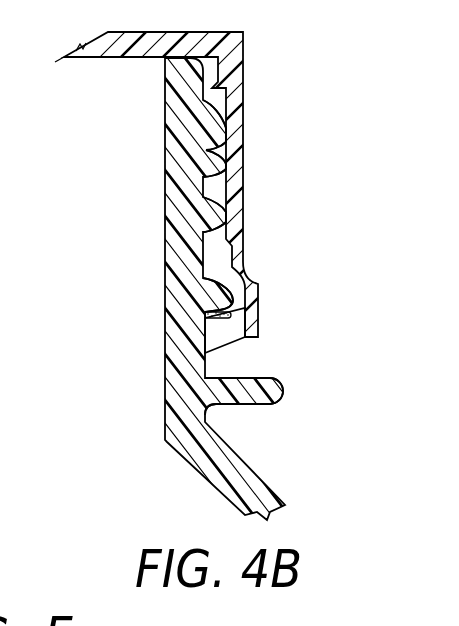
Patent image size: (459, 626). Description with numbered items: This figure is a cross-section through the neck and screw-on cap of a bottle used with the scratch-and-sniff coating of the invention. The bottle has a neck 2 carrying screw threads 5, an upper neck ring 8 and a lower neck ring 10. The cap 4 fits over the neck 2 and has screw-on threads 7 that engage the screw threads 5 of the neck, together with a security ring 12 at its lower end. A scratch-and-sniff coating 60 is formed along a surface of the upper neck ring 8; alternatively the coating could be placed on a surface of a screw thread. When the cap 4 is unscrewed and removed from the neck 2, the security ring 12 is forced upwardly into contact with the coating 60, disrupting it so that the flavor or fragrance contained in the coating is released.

The neck 2 is at (173, 225).
The cap 4 is at (235, 45).
The screw threads 5 is at (210, 133).
The screw-on threads 7 is at (245, 148).
The upper neck ring 8 is at (222, 290).
The lower neck ring 10 is at (270, 385).
The security ring 12 is at (233, 332).
The scratch-and-sniff coating 60 is at (203, 315).